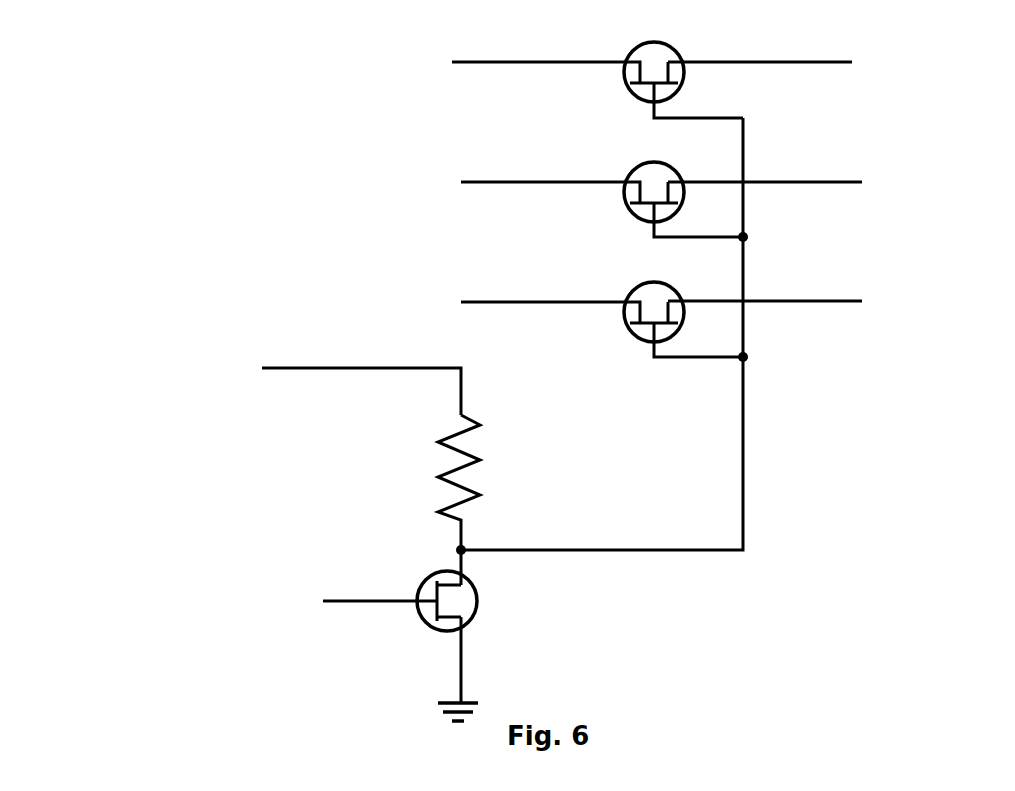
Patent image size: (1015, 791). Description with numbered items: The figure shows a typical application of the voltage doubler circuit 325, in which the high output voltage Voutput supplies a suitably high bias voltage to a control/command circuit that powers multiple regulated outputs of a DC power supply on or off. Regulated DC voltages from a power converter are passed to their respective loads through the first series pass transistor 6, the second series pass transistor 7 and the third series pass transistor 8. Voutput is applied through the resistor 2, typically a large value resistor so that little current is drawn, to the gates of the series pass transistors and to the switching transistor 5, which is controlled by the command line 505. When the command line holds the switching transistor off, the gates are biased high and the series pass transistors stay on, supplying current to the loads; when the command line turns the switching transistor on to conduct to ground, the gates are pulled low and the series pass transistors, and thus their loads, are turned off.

The voltage doubler circuit 325 is at (272, 388).
The command line 505 is at (337, 600).
The series pass transistor Q6 6 is at (658, 78).
The series pass transistor Q7 7 is at (682, 197).
The series pass transistor Q8 8 is at (682, 317).
The transistor Q5 5 is at (468, 635).
The resistor R2 2 is at (477, 482).